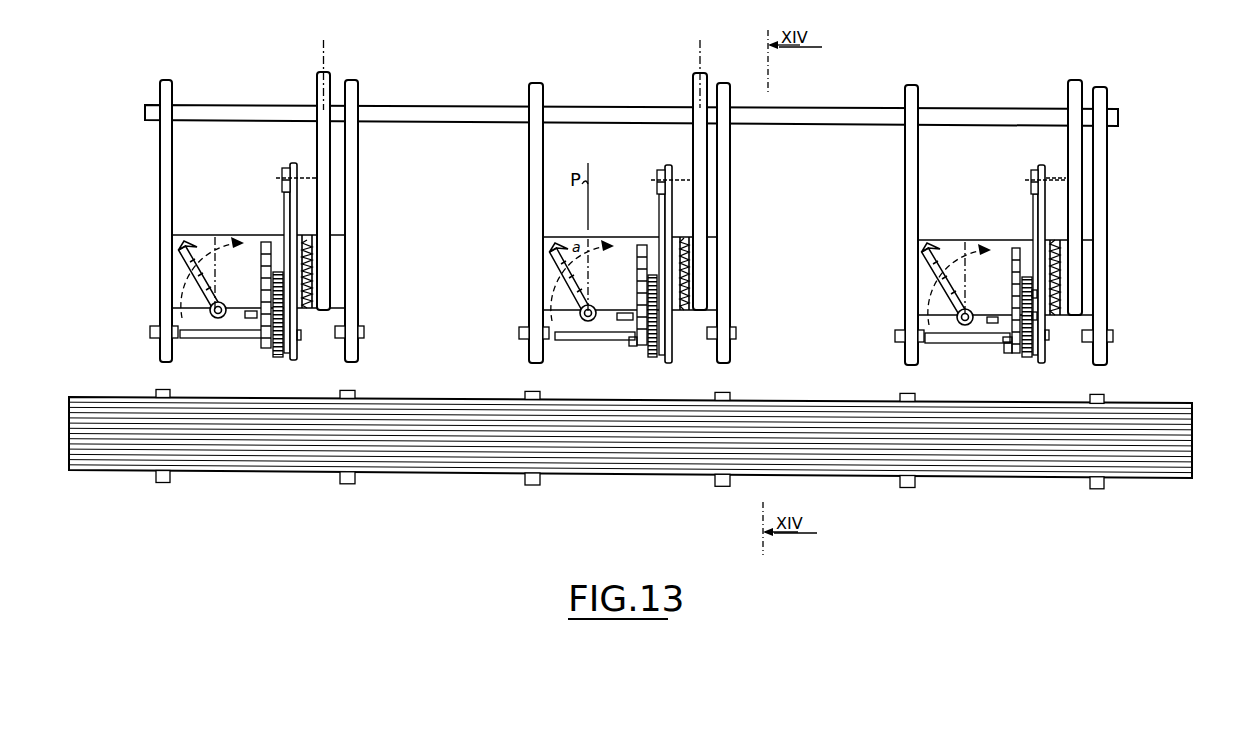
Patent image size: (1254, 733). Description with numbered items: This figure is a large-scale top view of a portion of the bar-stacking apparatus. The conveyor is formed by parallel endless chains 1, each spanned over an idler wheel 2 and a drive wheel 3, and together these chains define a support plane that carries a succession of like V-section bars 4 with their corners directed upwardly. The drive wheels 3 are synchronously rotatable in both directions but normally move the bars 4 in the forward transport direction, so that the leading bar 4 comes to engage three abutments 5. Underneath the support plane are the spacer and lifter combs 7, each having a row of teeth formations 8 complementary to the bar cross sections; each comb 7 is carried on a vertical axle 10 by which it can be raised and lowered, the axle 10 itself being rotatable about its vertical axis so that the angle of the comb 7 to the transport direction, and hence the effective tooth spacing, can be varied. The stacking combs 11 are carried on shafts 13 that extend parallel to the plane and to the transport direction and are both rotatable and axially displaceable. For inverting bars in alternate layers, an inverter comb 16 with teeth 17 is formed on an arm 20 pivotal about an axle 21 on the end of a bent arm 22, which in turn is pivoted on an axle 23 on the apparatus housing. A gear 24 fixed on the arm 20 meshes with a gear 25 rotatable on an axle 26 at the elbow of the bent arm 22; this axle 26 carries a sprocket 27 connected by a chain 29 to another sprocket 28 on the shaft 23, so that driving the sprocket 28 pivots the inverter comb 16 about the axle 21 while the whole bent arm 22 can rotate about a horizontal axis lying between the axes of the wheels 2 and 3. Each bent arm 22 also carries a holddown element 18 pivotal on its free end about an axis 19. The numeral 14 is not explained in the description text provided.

The endless chain 1 is at (165, 150).
The idler wheel 2 is at (150, 333).
The drive wheel 3 is at (862, 110).
The V-section bar 4 is at (403, 430).
The abutment 5 is at (250, 320).
The spacer and lifter comb 7 is at (186, 244).
The teeth formation 8 is at (178, 258).
The vertical axle 10 is at (216, 322).
The stacking comb 11 is at (311, 245).
The shaft 13 is at (322, 48).
The rail assembly 14 is at (1200, 405).
The inverter comb 16 is at (983, 247).
The tooth 17 is at (1006, 255).
The holddown element 18 is at (592, 342).
The axis 19 is at (632, 346).
The arm 20 is at (1008, 335).
The axle 21 is at (300, 336).
The bent arm 22 is at (294, 362).
The axle 23 is at (1058, 178).
The gear 24 is at (268, 350).
The gear 25 is at (283, 287).
The axle 26 is at (1032, 300).
The sprocket 27 is at (1030, 320).
The sprocket 28 is at (283, 170).
The chain 29 is at (659, 205).